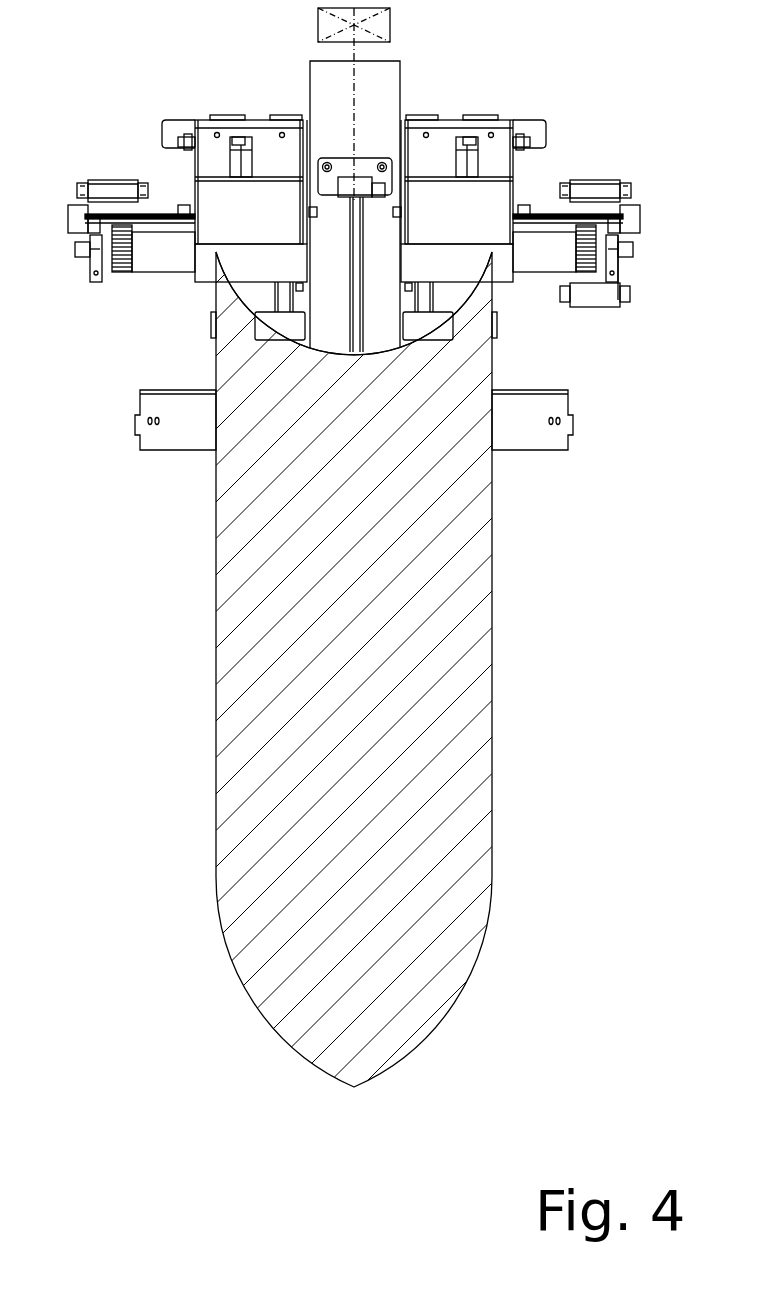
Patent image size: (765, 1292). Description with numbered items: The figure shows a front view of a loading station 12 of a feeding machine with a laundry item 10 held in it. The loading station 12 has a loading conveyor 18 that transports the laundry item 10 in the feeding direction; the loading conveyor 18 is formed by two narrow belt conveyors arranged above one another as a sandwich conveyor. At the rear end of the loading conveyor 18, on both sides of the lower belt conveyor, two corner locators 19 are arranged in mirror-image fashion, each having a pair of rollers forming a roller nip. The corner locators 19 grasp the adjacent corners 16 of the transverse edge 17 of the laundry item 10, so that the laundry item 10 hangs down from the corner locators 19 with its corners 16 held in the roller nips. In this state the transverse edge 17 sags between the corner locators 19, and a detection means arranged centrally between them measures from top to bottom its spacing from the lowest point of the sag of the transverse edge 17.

The laundry item 10 is at (475, 700).
The loading station 12 is at (180, 583).
The corners 16 is at (215, 250).
The transverse edge 17 is at (318, 350).
The loading conveyor 18 is at (330, 308).
The corner locators 19 is at (253, 255).